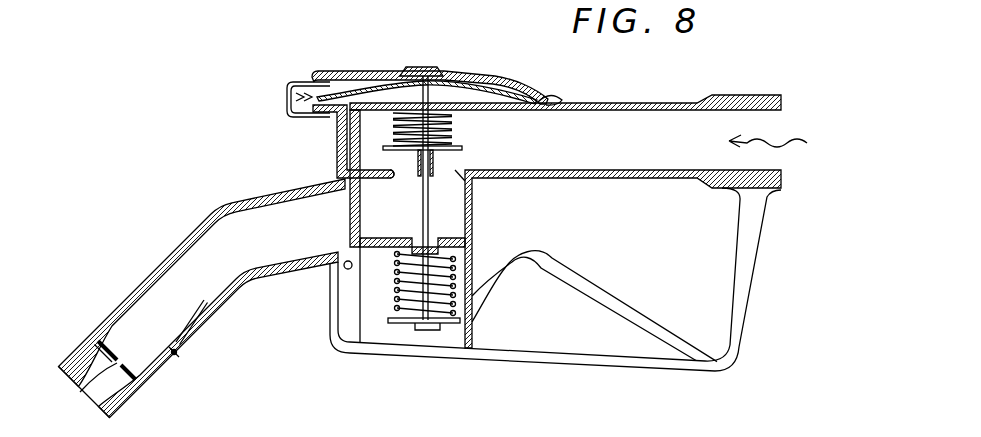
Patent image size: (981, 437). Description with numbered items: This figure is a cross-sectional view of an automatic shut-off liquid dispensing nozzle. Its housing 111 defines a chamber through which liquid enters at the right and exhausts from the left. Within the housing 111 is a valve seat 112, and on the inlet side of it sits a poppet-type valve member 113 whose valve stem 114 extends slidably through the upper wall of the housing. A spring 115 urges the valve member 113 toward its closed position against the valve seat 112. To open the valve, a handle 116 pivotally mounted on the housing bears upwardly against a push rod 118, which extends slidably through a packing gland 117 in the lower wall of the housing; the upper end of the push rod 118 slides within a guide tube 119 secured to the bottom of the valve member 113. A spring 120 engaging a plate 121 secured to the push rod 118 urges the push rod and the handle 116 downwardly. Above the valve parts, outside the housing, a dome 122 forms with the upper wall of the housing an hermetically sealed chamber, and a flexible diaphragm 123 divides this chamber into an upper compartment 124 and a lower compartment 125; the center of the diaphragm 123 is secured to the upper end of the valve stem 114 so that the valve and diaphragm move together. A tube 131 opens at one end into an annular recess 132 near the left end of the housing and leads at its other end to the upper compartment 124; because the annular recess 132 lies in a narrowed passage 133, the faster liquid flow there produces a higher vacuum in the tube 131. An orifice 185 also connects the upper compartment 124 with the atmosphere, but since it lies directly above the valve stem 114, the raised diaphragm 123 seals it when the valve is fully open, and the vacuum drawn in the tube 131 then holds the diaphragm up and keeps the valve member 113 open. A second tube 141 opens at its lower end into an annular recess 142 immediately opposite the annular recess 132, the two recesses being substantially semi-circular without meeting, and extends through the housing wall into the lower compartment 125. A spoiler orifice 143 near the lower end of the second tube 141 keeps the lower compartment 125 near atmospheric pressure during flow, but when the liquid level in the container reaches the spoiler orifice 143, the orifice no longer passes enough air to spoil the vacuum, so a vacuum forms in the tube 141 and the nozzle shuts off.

The housing 111 is at (162, 262).
The valve seat 112 is at (394, 159).
The valve member 113 is at (455, 149).
The valve stem 114 is at (455, 138).
The spring 115 is at (457, 122).
The handle 116 is at (608, 292).
The packing gland 117 is at (410, 240).
The push rod 118 is at (421, 190).
The guide tube 119 is at (437, 158).
The spring 120 is at (449, 255).
The plate 121 is at (458, 321).
The dome 122 is at (362, 78).
The flexible diaphragm 123 is at (492, 94).
The upper compartment 124 is at (333, 79).
The lower compartment 125 is at (338, 102).
The tube 131 is at (286, 105).
The annular recess 132 is at (117, 349).
The narrowed passage 133 is at (66, 421).
The second tube 141 is at (193, 321).
The annular recess 142 is at (115, 372).
The spoiler orifice 143 is at (177, 354).
The boss 185 is at (421, 69).